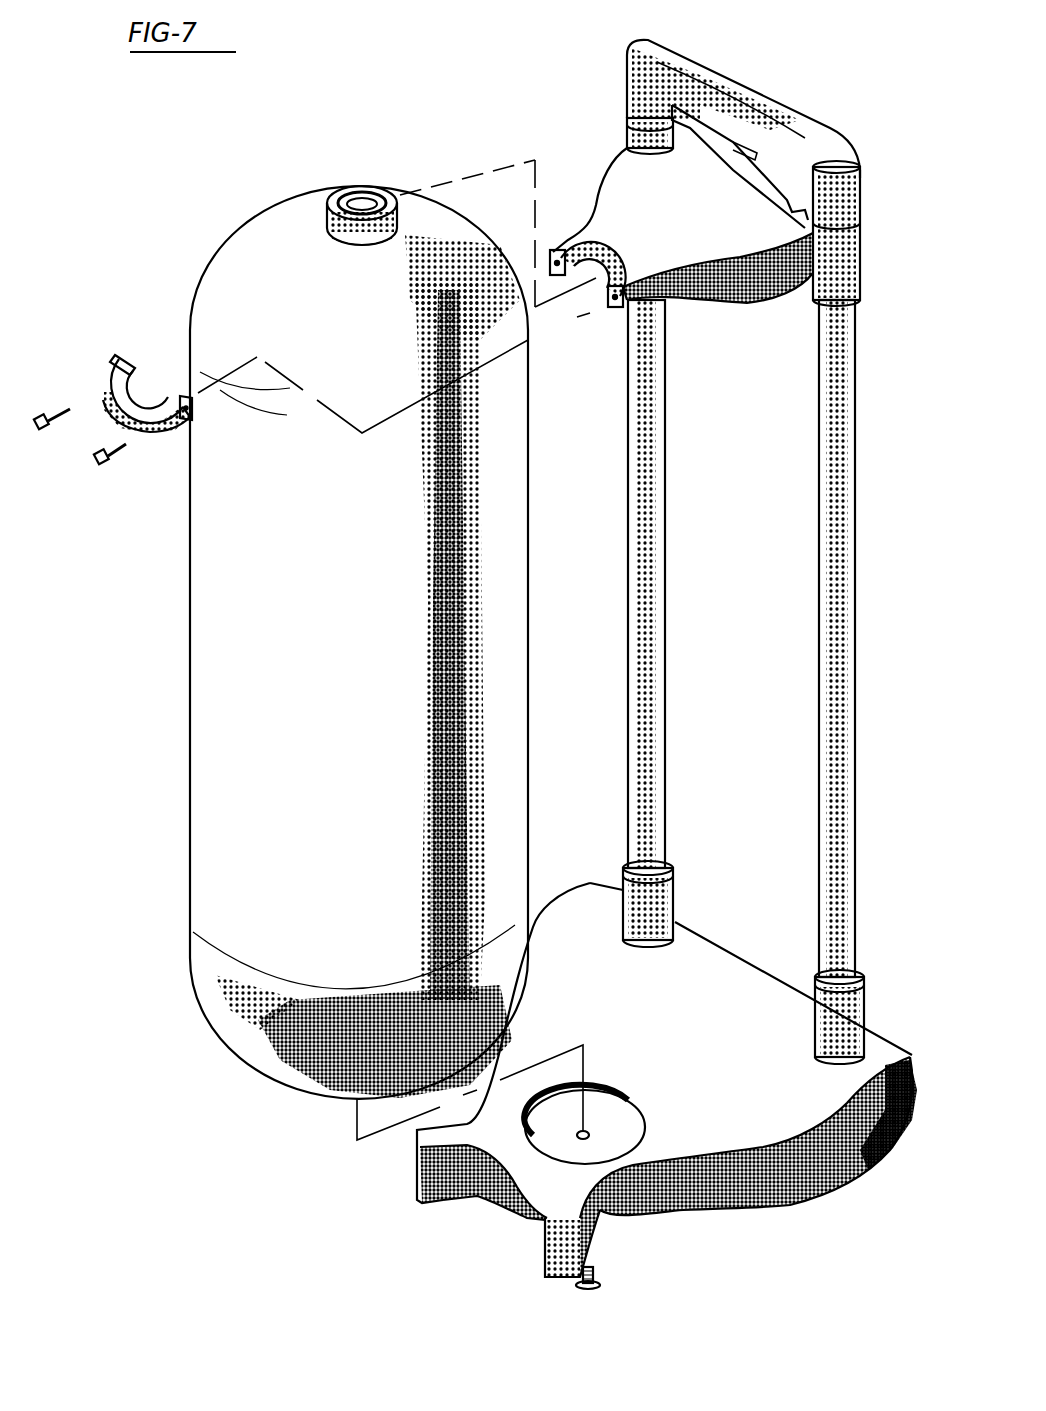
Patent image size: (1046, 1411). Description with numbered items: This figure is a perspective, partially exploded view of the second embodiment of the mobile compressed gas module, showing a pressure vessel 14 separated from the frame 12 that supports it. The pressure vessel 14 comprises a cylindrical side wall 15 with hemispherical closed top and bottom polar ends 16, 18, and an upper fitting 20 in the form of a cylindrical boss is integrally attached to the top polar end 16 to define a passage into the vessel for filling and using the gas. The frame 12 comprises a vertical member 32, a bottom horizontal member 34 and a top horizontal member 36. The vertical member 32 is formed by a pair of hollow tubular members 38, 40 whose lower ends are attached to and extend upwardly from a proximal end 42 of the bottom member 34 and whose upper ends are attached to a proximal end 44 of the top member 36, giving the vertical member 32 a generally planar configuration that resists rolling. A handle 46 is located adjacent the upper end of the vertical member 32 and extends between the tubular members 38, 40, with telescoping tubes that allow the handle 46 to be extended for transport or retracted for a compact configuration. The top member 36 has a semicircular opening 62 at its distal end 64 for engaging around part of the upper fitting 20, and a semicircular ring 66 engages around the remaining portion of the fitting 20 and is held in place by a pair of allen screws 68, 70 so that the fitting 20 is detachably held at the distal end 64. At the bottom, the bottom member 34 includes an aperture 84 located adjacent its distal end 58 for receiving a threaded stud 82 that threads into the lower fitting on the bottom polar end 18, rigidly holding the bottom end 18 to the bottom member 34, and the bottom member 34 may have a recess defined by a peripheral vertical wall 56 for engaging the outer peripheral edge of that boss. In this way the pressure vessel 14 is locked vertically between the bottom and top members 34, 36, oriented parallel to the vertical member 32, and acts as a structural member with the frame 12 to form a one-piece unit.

The frame 12 is at (576, 192).
The pressure vessel 14 is at (353, 637).
The cylindrical side wall 15 is at (215, 800).
The top polar end 16 is at (277, 219).
The bottom polar end 18 is at (290, 1085).
The upper fitting 20 is at (357, 195).
The vertical member 32 is at (637, 674).
The bottom horizontal member 34 is at (667, 1097).
The top horizontal member 36 is at (681, 180).
The tubular member 38 is at (822, 555).
The tubular member 40 is at (633, 570).
The proximal end of bottom member 42 is at (745, 985).
The proximal end of top member 44 is at (633, 135).
The handle 46 is at (750, 90).
The peripheral vertical wall 56 is at (598, 1100).
The distal end of bottom member 58 is at (640, 1190).
The semicircular opening 62 is at (600, 280).
The distal end of top member 64 is at (575, 238).
The semicircular ring 66 is at (160, 393).
The allen screw 68 is at (108, 463).
The allen screw 70 is at (48, 432).
The threaded stud 82 is at (598, 1284).
The aperture 84 is at (589, 1136).